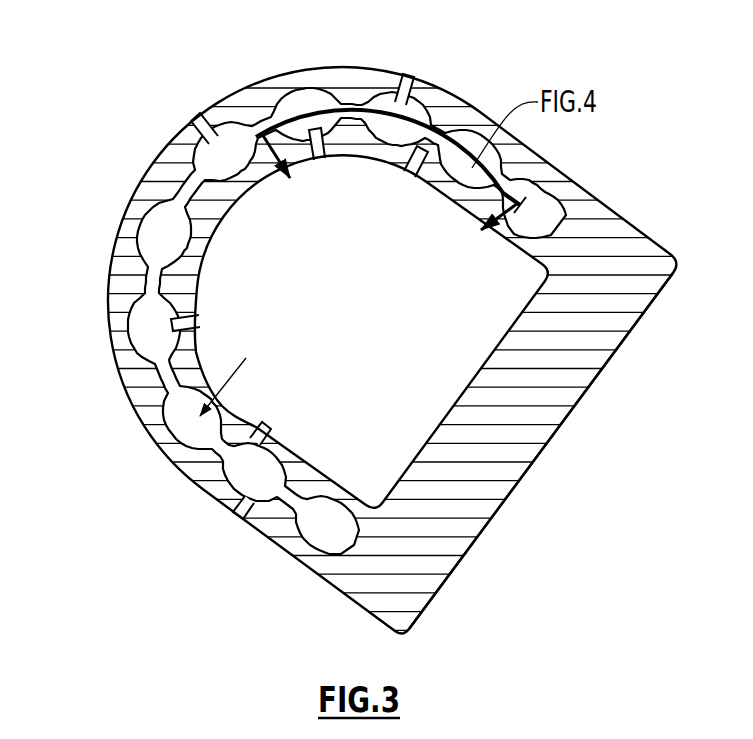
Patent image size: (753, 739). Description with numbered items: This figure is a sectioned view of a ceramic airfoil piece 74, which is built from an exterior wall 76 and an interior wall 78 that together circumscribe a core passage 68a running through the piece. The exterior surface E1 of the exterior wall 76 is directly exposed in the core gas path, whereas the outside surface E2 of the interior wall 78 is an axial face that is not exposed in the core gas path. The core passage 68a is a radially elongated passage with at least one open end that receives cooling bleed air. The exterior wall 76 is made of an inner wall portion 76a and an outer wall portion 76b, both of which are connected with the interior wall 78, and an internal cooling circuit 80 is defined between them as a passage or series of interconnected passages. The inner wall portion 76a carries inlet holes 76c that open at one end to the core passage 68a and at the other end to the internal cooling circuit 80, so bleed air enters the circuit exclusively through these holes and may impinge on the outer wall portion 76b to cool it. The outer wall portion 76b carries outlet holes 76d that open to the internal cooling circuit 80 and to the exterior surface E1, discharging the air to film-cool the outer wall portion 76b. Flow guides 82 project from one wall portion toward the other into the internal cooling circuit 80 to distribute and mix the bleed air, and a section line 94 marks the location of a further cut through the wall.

The ceramic airfoil piece 74 is at (166, 548).
The exterior wall 76 is at (440, 73).
The inner wall portion 76a is at (198, 272).
The outer wall portion 76b is at (122, 278).
The inlet holes 76c is at (320, 147).
The outlet holes 76d is at (197, 120).
The interior wall 78 is at (552, 451).
The internal cooling circuit 80 is at (162, 236).
The flow guides 82 is at (282, 113).
The section line 94 is at (405, 116).
The core passage 68a is at (398, 360).
The exterior surface E1 is at (362, 66).
The outside surface E2 is at (614, 357).